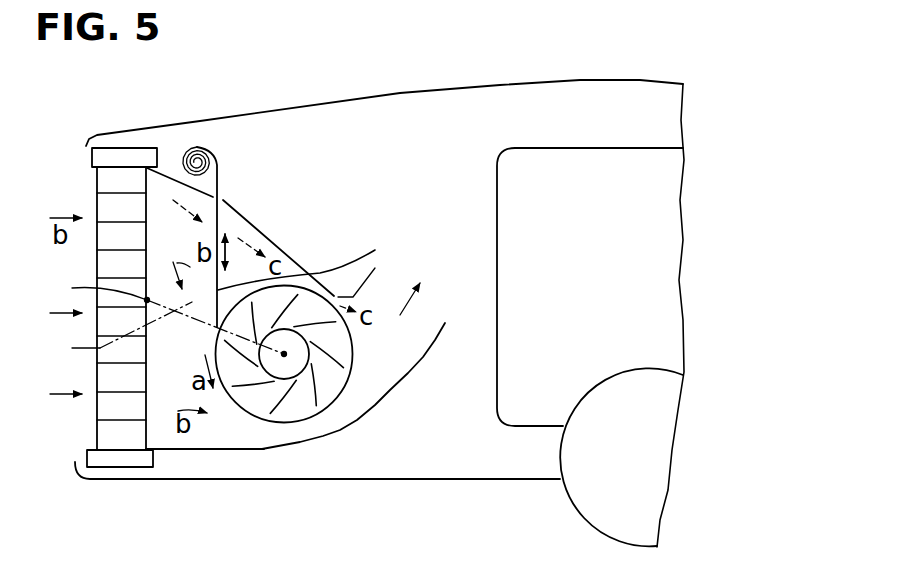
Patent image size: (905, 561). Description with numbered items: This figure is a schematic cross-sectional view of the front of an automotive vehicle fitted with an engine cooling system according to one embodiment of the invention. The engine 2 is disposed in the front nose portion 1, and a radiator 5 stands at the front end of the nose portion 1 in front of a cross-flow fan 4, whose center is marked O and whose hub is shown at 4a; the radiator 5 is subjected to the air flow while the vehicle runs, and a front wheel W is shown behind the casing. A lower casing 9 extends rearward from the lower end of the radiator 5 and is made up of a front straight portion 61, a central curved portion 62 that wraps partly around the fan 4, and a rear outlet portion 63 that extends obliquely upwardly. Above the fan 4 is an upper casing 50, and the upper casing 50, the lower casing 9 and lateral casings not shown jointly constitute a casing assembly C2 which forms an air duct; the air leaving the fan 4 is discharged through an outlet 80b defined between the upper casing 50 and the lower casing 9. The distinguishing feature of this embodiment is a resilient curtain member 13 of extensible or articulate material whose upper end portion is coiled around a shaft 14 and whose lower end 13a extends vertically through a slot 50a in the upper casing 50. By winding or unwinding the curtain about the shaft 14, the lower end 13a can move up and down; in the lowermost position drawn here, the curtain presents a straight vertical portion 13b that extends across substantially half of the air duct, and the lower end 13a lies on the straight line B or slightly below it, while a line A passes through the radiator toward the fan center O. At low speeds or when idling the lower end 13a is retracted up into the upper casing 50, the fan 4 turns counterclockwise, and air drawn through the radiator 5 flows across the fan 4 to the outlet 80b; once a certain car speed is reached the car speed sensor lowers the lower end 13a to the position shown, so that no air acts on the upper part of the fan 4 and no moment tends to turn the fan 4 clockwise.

The front nose portion 1 is at (199, 120).
The engine 2 is at (567, 160).
The cross-flow fan 4 is at (330, 386).
The fan hub 4a is at (306, 367).
The radiator 5 is at (112, 183).
The lower casing 9 is at (200, 453).
The resilient curtain member 13 is at (209, 152).
The lower end 13a is at (214, 328).
The straight vertical portion 13b is at (313, 262).
The shaft 14 is at (216, 161).
The upper casing 50 is at (305, 256).
The slot 50a is at (223, 194).
The front straight portion 61 is at (245, 451).
The central curved portion 62 is at (345, 436).
The rear outlet portion 63 is at (440, 333).
The outlet 80b is at (423, 317).
The axis A is at (168, 312).
The straight line B is at (121, 334).
The casing assembly C2 is at (291, 236).
The fan center O is at (310, 351).
The front wheel W is at (627, 382).